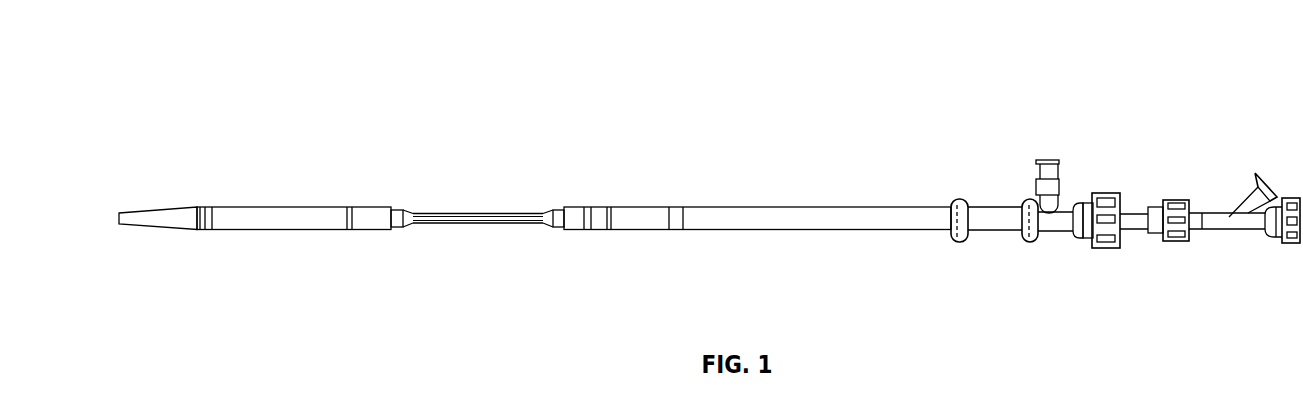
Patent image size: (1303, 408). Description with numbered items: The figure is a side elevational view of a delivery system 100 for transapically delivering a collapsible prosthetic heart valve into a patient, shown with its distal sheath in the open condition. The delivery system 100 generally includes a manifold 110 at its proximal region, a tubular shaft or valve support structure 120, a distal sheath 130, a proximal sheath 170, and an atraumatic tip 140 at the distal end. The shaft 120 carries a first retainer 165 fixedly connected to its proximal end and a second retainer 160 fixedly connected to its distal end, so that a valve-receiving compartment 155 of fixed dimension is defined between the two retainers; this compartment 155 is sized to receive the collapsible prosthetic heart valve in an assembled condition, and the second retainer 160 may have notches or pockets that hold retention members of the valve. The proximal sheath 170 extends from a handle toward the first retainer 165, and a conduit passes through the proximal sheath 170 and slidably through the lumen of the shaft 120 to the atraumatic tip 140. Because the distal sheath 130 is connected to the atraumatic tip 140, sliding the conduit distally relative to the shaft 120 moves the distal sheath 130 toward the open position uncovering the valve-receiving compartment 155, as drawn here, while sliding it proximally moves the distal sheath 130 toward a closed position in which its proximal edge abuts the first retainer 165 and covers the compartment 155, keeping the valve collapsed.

The delivery system 100 is at (186, 80).
The manifold 110 is at (1177, 155).
The tubular shaft 120 is at (481, 212).
The distal sheath 130 is at (269, 231).
The atraumatic tip 140 is at (166, 211).
The valve-receiving compartment 155 is at (470, 236).
The second retainer 160 is at (400, 229).
The first retainer 165 is at (562, 212).
The proximal sheath 170 is at (766, 213).